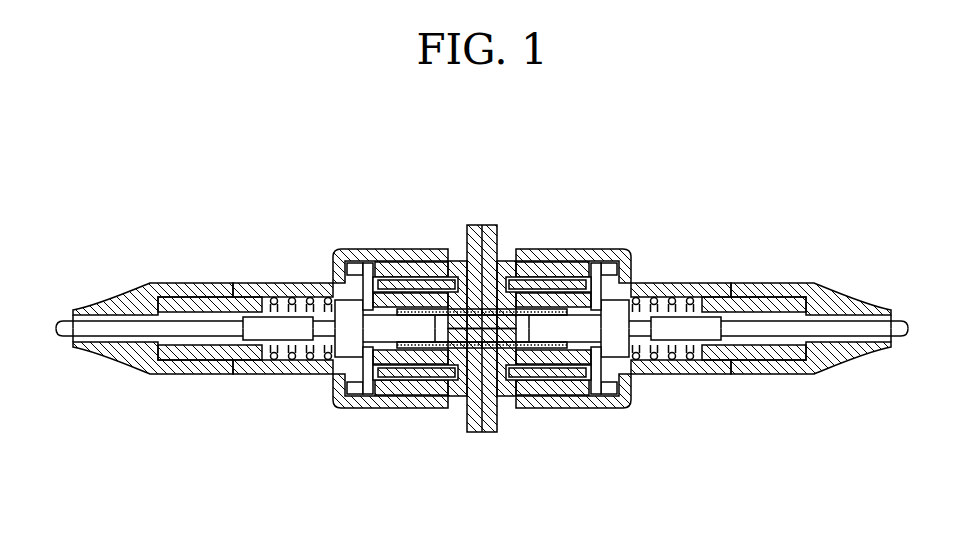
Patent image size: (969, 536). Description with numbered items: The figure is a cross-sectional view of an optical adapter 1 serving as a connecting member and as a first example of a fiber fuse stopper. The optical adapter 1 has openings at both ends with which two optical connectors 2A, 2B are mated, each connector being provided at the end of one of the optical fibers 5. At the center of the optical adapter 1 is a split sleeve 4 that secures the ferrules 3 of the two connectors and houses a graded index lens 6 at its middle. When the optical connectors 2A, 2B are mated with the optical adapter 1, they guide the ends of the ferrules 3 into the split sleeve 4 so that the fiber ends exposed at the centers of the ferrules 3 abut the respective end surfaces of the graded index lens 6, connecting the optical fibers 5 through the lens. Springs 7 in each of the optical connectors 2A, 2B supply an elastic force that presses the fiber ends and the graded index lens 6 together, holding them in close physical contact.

The optical adapter 1 is at (463, 214).
The optical connector 2A is at (270, 270).
The optical connector 2B is at (701, 270).
The ferrule 3 is at (403, 333).
The split sleeve 4 is at (497, 332).
The optical fiber 5 is at (203, 330).
The graded index lens 6 is at (500, 348).
The spring 7 is at (310, 360).